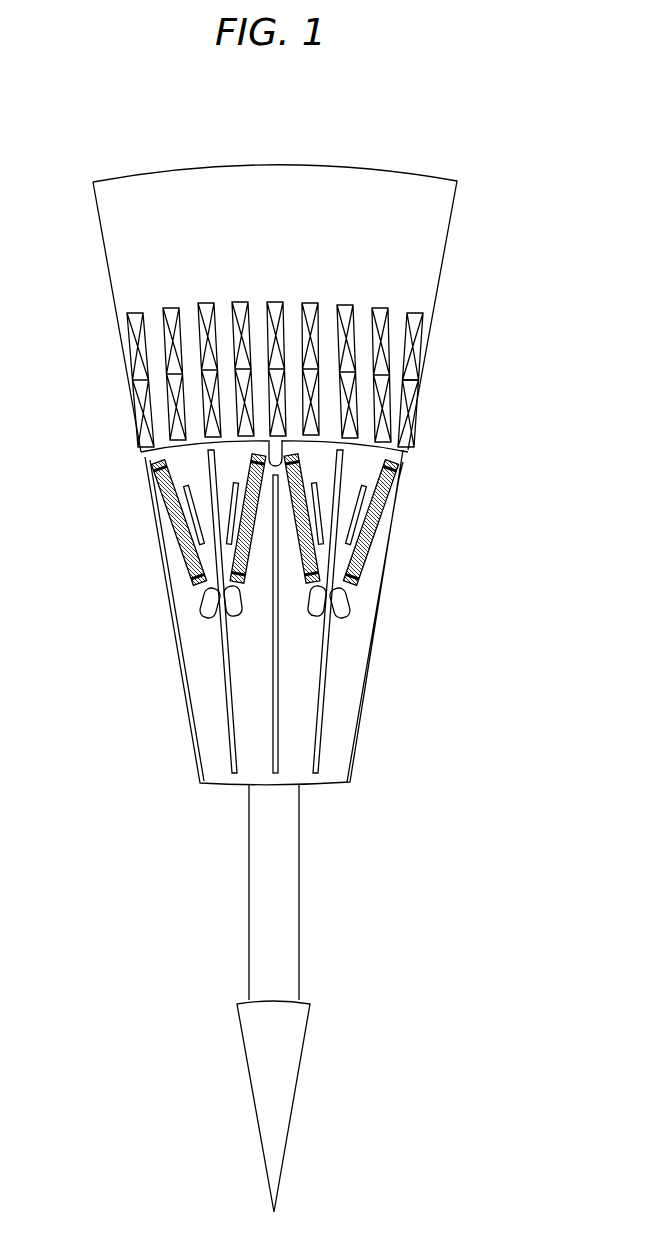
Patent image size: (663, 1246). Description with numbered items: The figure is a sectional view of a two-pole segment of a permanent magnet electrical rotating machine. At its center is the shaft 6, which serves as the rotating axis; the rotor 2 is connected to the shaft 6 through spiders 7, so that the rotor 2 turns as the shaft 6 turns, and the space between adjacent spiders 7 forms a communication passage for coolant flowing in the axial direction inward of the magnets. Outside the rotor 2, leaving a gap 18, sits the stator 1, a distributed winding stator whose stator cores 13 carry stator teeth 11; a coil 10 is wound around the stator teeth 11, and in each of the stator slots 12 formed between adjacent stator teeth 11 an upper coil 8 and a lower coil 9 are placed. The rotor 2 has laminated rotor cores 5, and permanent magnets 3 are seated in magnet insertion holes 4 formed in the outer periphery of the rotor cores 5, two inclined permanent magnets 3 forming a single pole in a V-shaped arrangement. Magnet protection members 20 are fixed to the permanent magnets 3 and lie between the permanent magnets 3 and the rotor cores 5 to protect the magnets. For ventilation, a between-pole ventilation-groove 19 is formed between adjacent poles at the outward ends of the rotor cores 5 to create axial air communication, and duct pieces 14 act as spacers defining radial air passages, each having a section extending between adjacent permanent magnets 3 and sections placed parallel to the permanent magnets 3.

The stator 1 is at (355, 165).
The rotor 2 is at (375, 657).
The permanent magnets 3 is at (382, 507).
The magnet insertion holes 4 is at (367, 550).
The rotor cores 5 is at (300, 723).
The shaft 6 is at (286, 1060).
The spiders 7 is at (286, 897).
The upper coil 8 is at (403, 390).
The lower coil 9 is at (413, 348).
The coil 10 is at (510, 338).
The stator teeth 11 is at (397, 320).
The stator slots 12 is at (172, 308).
The stator cores 13 is at (428, 237).
The duct pieces 14 is at (224, 585).
The gap 18 is at (365, 442).
The between-pole ventilation-groove 19 is at (268, 438).
The magnet protection members 20 is at (200, 586).